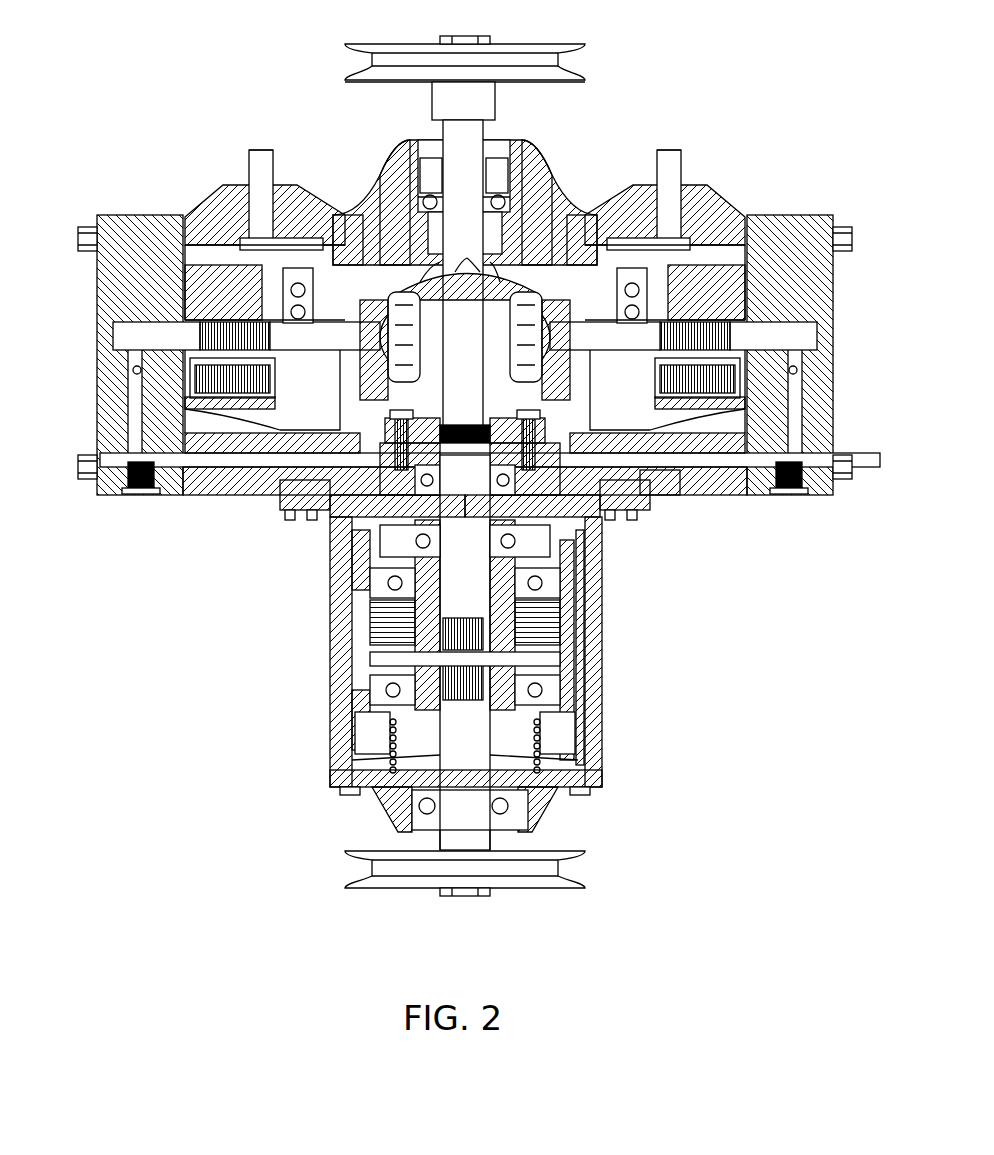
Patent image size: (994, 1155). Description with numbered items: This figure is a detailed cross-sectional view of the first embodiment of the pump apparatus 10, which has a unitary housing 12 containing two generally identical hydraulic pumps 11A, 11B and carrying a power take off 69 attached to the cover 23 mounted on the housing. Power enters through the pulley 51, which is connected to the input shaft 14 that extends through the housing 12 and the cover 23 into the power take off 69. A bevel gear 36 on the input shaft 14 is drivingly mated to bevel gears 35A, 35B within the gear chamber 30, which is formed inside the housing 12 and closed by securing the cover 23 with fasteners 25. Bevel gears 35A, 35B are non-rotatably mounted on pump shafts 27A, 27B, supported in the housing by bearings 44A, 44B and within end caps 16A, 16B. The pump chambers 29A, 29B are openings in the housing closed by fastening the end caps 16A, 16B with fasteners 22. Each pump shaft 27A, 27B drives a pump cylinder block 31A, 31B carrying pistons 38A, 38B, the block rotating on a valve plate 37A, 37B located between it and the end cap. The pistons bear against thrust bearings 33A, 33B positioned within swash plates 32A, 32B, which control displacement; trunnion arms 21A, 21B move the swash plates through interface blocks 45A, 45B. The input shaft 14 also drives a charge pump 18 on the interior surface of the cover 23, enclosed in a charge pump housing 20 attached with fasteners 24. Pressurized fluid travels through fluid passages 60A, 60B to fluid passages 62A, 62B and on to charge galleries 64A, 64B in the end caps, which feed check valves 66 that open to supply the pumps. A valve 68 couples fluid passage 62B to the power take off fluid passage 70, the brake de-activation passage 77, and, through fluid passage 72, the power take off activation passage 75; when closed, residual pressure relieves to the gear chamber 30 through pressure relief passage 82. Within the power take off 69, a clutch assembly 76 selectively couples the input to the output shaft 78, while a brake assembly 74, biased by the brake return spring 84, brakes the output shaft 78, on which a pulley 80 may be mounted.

The pump apparatus 10 is at (746, 85).
The hydraulic pump 11A is at (194, 180).
The hydraulic pump 11B is at (736, 180).
The unitary housing 12 is at (398, 170).
The input shaft 14 is at (480, 193).
The end cap 16A is at (126, 215).
The end cap 16B is at (808, 215).
The charge pump 18 is at (490, 442).
The charge pump housing 20 is at (510, 418).
The trunnion arm 21A is at (260, 150).
The trunnion arm 21B is at (670, 150).
The fasteners 22 is at (87, 227).
The cover 23 is at (280, 488).
The fasteners 24 is at (465, 652).
The fasteners 25 is at (285, 523).
The pump shaft 27A is at (246, 336).
The pump shaft 27B is at (683, 336).
The pump chamber 29A is at (170, 447).
The pump chamber 29B is at (762, 447).
The gear chamber 30 is at (441, 409).
The pump cylinder block 31A is at (228, 218).
The pump cylinder block 31B is at (705, 218).
The swash plate 32A is at (280, 440).
The swash plate 32B is at (690, 470).
The thrust bearing 33A is at (265, 410).
The thrust bearing 33B is at (708, 440).
The bevel gear 35A is at (422, 370).
The bevel gear 35B is at (510, 350).
The bevel gear 36 is at (463, 296).
The valve plate 37A is at (228, 425).
The valve plate 37B is at (702, 425).
The pump pistons 38A is at (235, 420).
The pump pistons 38B is at (700, 435).
The bearing 44A is at (380, 262).
The bearing 44B is at (548, 262).
The interface block 45A is at (345, 214).
The interface block 45B is at (585, 214).
The pulley 51 is at (516, 44).
The fluid passage 60A is at (334, 570).
The fluid passage 60B is at (598, 565).
The fluid passage 62A is at (295, 465).
The fluid passage 62B is at (660, 450).
The charge gallery 64A is at (134, 398).
The charge gallery 64B is at (795, 398).
The check valves 66 is at (132, 369).
The valve 68 is at (622, 508).
The power take off 69 is at (628, 703).
The power take off fluid passage 70 is at (590, 642).
The fluid passage 72 is at (596, 592).
The power take off brake assembly 74 is at (590, 760).
The power take off activation passage 75 is at (330, 622).
The power take off clutch assembly 76 is at (575, 672).
The brake de-activation passage 77 is at (347, 740).
The output shaft 78 is at (479, 827).
The pulley 80 is at (520, 888).
The pressure relief passage 82 is at (660, 470).
The brake return spring 84 is at (598, 786).